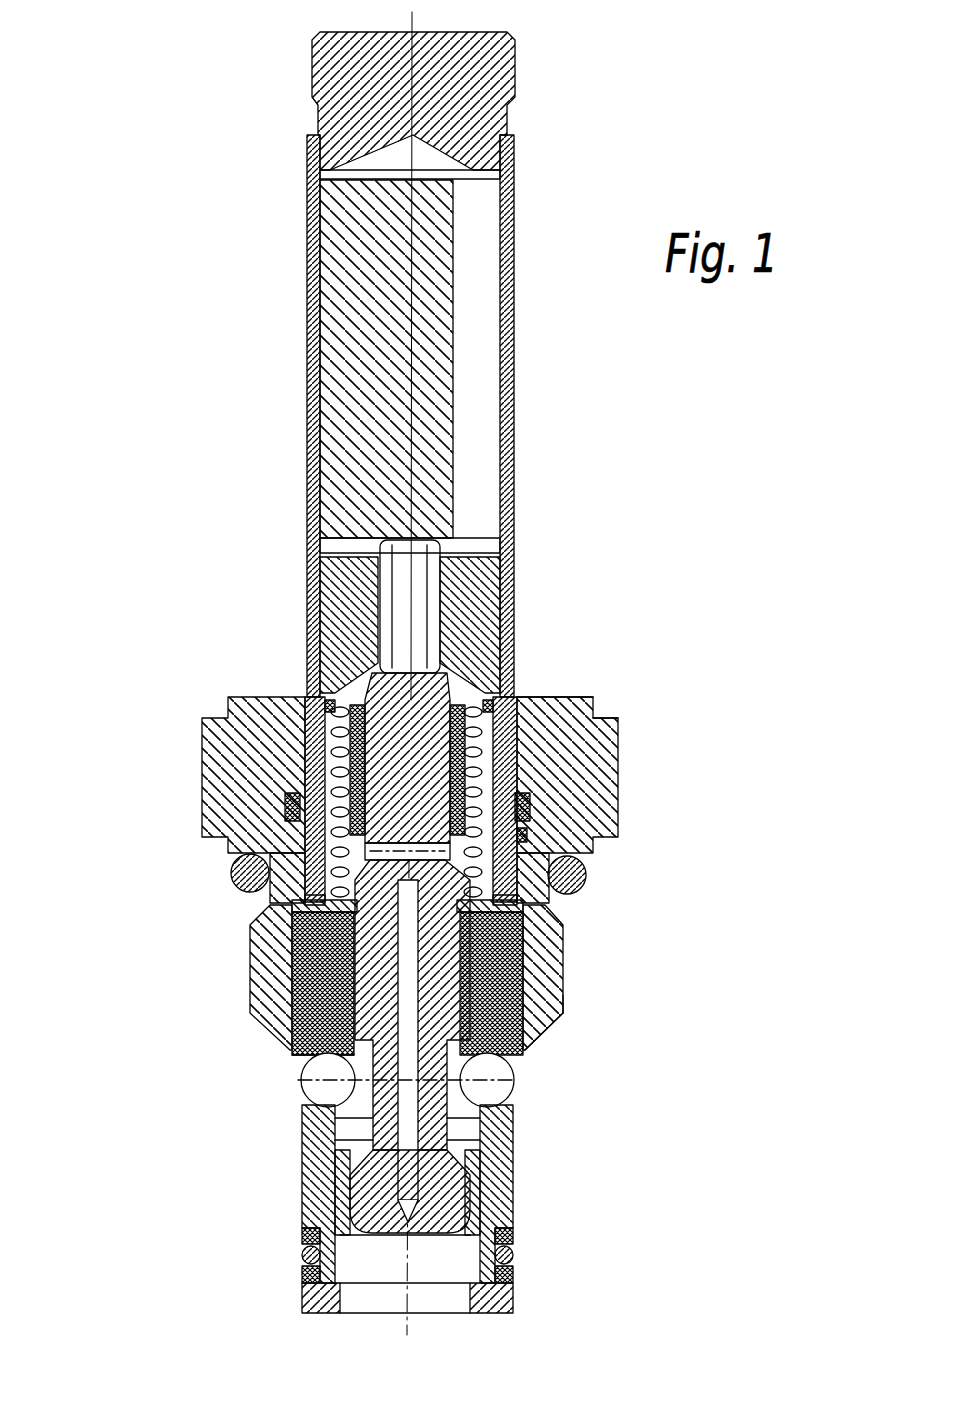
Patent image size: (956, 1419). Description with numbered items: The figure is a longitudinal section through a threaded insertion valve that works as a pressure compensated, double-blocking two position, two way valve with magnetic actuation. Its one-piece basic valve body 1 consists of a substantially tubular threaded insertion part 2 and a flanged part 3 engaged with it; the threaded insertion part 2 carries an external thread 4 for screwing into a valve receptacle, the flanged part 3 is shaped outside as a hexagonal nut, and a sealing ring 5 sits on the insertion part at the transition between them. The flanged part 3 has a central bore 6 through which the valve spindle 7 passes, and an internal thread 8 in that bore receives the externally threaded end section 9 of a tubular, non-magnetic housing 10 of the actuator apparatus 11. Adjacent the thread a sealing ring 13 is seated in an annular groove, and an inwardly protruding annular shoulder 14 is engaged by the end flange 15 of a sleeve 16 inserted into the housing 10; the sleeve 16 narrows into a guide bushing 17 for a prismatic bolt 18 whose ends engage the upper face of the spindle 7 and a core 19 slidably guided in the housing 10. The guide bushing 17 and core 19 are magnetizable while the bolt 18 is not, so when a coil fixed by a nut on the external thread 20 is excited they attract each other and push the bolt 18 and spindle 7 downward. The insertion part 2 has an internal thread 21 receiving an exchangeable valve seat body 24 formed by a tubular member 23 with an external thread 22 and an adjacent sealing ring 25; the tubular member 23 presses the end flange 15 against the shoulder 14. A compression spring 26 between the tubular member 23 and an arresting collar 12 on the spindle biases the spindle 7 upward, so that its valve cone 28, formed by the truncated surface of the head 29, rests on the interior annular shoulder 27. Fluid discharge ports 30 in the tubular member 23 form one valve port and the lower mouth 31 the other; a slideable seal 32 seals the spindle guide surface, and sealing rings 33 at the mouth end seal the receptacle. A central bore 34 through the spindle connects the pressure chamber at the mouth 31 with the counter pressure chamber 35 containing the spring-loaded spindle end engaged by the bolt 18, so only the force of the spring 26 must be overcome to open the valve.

The basic valve body 1 is at (617, 921).
The threaded insertion part 2 is at (538, 983).
The flanged part 3 is at (605, 780).
The external thread 4 is at (570, 1010).
The sealing ring 5 is at (585, 873).
The central bore 6 is at (520, 835).
The valve spindle 7 is at (430, 745).
The internal thread 8 is at (552, 713).
The externally threaded end section 9 is at (525, 700).
The tubular housing 10 is at (510, 230).
The actuator apparatus 11 is at (547, 516).
The arresting collar 12 is at (368, 690).
The sealing ring 13 is at (288, 805).
The annular shoulder 14 is at (300, 842).
The end flange 15 is at (323, 897).
The sleeve 16 is at (322, 741).
The guide bushing 17 is at (478, 603).
The prismatic bolt 18 is at (418, 560).
The core 19 is at (340, 365).
The external thread 20 is at (508, 62).
The internal thread 21 is at (292, 948).
The external thread 22 is at (295, 980).
The tubular member 23 is at (310, 1045).
The valve seat body 24 is at (287, 1124).
The sealing ring 25 is at (540, 1034).
The compression spring 26 is at (333, 785).
The annular shoulder 27 is at (462, 1150).
The valve cone 28 is at (475, 1185).
The head 29 is at (470, 1213).
The fluid discharge ports 30 is at (503, 1090).
The mouth 31 is at (472, 1294).
The slideable seal 32 is at (507, 958).
The sealing rings 33 is at (512, 1255).
The central bore 34 is at (398, 1198).
The counter pressure chamber 35 is at (318, 640).